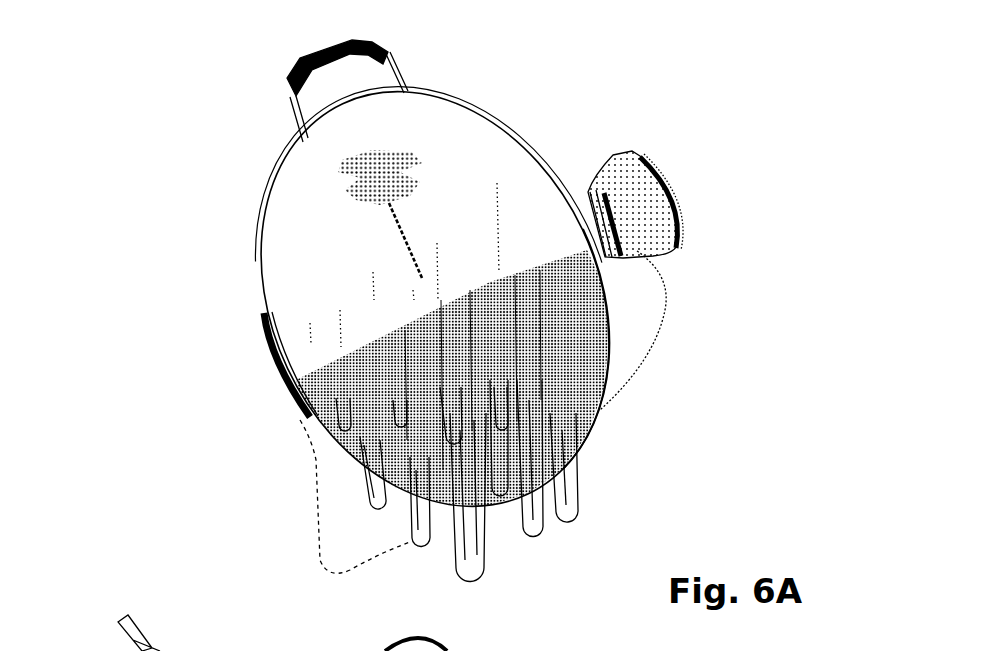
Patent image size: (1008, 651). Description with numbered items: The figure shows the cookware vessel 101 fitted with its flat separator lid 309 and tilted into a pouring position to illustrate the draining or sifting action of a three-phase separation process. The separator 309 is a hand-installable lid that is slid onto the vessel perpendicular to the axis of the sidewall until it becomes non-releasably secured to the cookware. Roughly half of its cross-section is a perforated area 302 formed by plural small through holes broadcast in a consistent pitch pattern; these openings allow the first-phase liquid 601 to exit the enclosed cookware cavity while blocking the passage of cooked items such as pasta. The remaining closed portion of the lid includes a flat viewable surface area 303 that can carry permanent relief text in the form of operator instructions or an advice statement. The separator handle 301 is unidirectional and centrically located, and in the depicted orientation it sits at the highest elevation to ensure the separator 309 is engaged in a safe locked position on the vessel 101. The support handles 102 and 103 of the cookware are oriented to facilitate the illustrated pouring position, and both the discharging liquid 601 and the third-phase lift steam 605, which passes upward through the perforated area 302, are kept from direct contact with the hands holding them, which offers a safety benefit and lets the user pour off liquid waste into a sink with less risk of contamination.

The separator handle 301 is at (402, 67).
The flat viewable surface area 303 is at (302, 212).
The support handle 103 is at (688, 200).
The cookware vessel 101 is at (640, 309).
The support handle 102 is at (262, 357).
The separator lid 309 is at (603, 418).
The perforated area 302 is at (345, 424).
The phase-1 liquid 601 is at (583, 518).
The phase-3 lift steam 605 is at (320, 578).